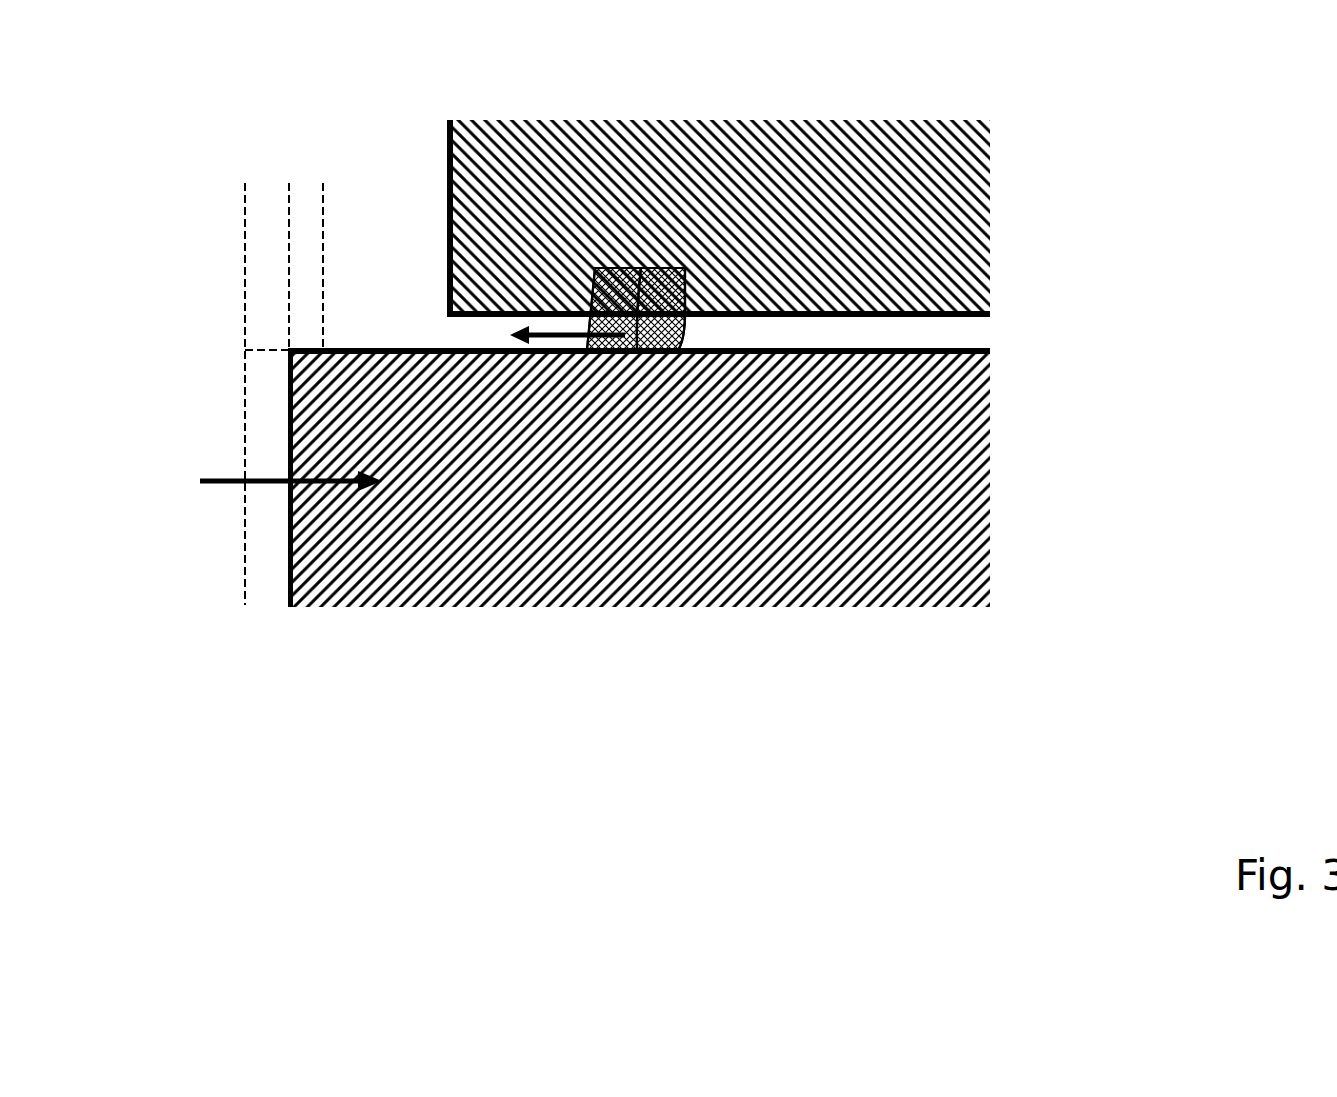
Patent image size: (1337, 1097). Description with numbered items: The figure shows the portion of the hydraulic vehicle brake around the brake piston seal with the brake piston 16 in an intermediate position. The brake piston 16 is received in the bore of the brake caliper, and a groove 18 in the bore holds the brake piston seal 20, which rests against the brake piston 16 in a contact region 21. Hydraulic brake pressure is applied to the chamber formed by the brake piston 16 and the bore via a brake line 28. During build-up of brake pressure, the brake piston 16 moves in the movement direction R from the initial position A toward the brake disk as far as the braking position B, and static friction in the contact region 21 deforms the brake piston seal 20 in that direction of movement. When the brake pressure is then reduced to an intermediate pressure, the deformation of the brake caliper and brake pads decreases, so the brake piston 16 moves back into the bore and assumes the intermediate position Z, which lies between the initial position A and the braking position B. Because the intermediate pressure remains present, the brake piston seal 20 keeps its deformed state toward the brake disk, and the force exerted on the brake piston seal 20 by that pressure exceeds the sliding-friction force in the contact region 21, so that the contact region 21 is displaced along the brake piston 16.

The brake piston 16 is at (958, 533).
The brake line 28 is at (957, 260).
The groove 18 is at (660, 268).
The brake piston seal 20 is at (652, 305).
The contact region 21 is at (643, 268).
The initial position A is at (323, 210).
The intermediate position Z is at (289, 210).
The braking position B is at (245, 221).
The movement direction R is at (222, 482).